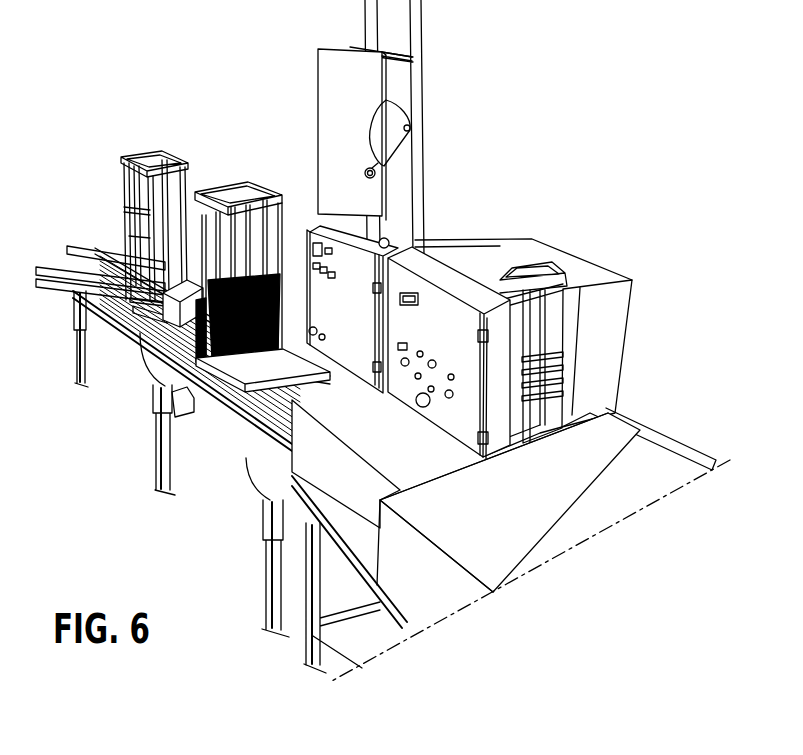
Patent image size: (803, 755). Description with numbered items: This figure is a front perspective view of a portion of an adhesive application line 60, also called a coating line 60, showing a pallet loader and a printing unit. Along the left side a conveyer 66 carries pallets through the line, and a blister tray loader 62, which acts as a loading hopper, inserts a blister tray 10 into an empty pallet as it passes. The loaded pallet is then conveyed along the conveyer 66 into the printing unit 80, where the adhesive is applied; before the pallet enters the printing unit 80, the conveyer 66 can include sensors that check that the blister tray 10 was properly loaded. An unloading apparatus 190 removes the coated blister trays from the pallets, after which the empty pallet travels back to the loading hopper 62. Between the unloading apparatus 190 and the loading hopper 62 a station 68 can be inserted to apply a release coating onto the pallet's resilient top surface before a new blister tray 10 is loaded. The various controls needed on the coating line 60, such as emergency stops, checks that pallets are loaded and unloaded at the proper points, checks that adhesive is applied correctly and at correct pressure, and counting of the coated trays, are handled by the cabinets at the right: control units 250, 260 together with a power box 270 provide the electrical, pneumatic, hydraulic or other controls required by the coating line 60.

The blister tray 10 is at (163, 407).
The adhesive application line 60 is at (181, 493).
The blister tray loader 62 is at (244, 186).
The conveyer 66 is at (275, 395).
The station 68 is at (172, 325).
The printing unit 80 is at (347, 532).
The unloading apparatus 190 is at (143, 158).
The control unit 250 is at (358, 280).
The control unit 260 is at (433, 312).
The power box 270 is at (334, 125).